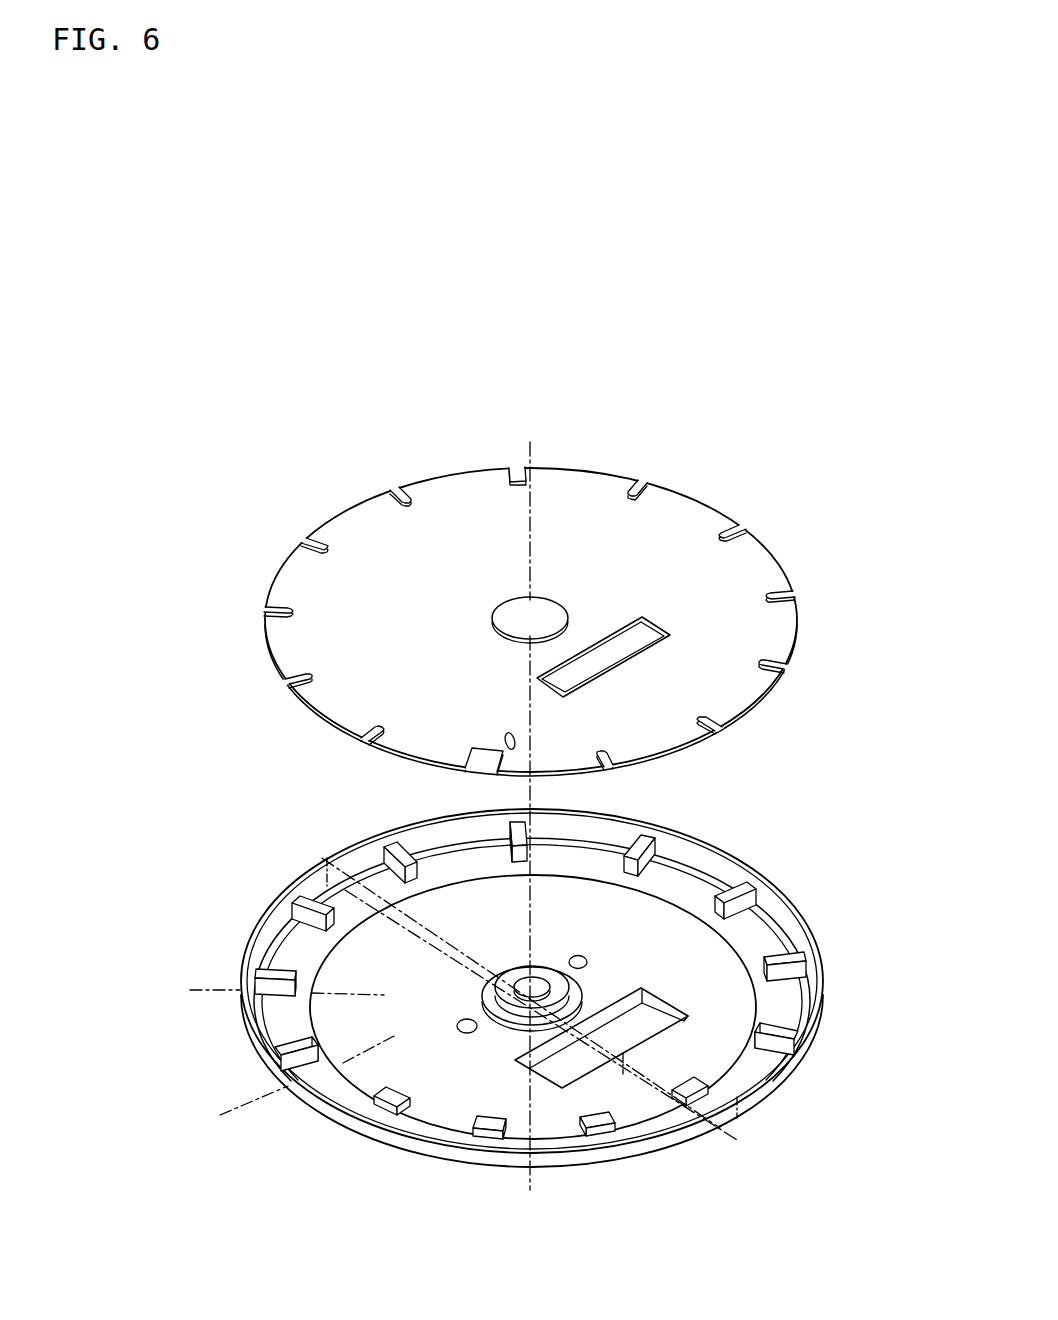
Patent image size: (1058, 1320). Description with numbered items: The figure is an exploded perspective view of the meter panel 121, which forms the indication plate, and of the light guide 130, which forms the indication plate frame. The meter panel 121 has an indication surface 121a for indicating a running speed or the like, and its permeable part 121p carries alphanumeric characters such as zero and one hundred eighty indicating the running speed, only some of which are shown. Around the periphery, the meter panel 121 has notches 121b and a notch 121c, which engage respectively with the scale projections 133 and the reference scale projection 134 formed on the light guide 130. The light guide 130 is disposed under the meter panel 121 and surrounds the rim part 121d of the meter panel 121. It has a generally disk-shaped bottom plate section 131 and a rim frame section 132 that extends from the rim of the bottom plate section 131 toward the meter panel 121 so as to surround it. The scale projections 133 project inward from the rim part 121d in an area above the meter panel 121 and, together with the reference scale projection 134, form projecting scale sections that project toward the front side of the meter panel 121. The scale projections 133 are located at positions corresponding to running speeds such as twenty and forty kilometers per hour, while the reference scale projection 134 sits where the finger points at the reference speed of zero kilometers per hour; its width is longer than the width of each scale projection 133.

The meter panel 121 is at (583, 603).
The indication surface 121a is at (566, 477).
The notches 121b is at (746, 523).
The notch 121c is at (478, 763).
The rim part 121d is at (802, 631).
The permeable part 121p is at (660, 698).
The light guide 130 is at (541, 1020).
The bottom plate section 131 is at (438, 1058).
The rim frame section 132 is at (651, 1140).
The scale projections 133 is at (660, 846).
The reference scale projection 134 is at (484, 1132).